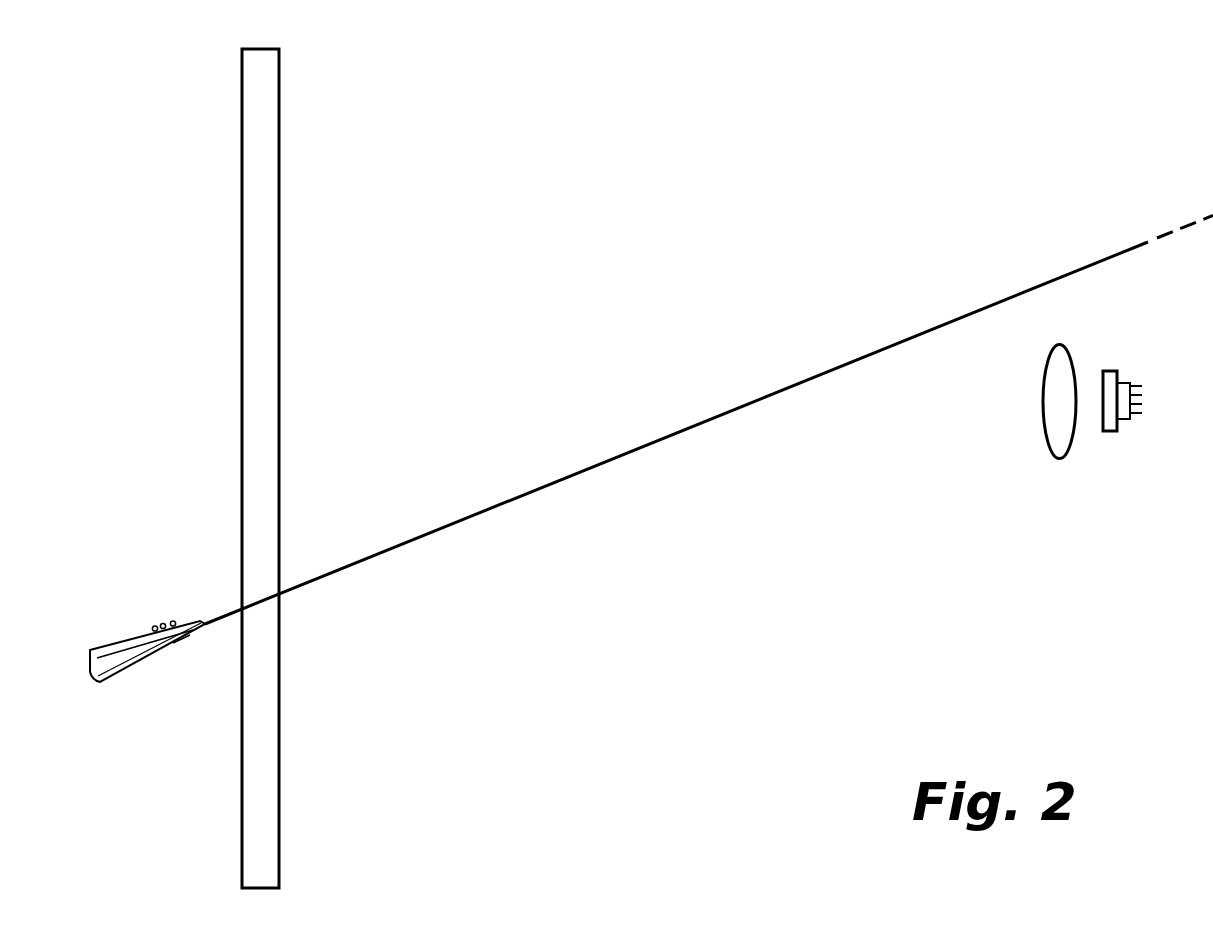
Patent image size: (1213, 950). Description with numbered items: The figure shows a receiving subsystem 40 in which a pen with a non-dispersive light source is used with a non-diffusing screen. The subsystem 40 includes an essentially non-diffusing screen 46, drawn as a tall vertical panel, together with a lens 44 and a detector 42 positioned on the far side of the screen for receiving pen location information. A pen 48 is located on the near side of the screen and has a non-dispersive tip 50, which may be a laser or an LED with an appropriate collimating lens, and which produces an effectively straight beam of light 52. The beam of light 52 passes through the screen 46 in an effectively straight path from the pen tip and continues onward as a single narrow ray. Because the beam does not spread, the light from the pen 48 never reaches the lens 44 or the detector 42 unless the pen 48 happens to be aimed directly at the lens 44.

The receiving subsystem 40 is at (722, 195).
The detector 42 is at (1126, 380).
The lens 44 is at (1060, 343).
The non-diffusing screen 46 is at (280, 343).
The pen 48 is at (128, 632).
The non-dispersive tip 50 is at (205, 629).
The beam of light 52 is at (445, 527).